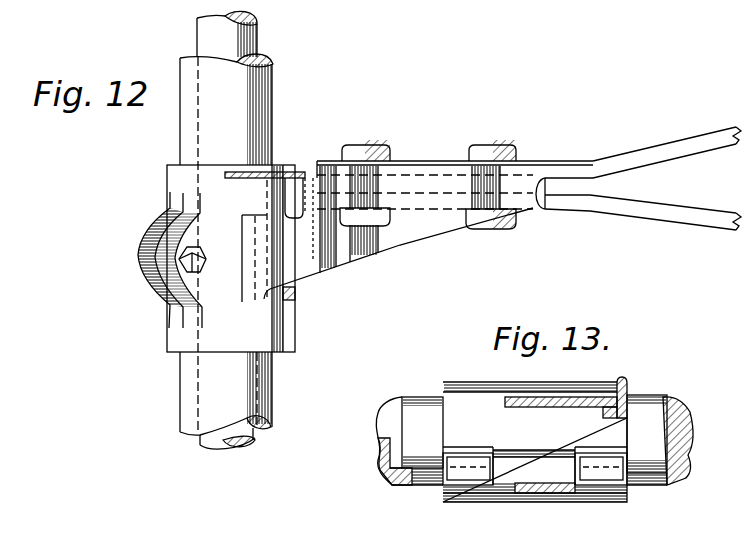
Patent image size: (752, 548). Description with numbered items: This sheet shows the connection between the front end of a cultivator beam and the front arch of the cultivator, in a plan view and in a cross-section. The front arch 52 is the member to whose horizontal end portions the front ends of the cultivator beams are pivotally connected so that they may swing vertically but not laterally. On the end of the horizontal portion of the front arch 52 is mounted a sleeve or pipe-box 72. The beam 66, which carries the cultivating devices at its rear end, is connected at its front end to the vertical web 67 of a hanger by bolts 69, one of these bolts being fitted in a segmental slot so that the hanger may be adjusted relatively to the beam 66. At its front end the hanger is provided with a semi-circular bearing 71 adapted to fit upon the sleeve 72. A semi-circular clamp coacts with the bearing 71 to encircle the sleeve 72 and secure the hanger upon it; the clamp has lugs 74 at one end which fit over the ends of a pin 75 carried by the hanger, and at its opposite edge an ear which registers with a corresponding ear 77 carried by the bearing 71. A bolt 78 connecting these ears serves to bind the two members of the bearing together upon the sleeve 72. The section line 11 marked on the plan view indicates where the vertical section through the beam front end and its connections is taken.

In FIG. 12, the section line 11 is at (146, 301).
In FIG. 12, the front arch 52 is at (209, 40).
In FIG. 13, the front arch 52 is at (377, 479).
In FIG. 12, the beam 66 is at (618, 161).
In FIG. 13, the vertical web 67 is at (606, 416).
In FIG. 12, the bolts 69 is at (372, 144).
In FIG. 12, the semi-circular bearing 71 is at (196, 338).
In FIG. 12, the sleeve or pipe-box 72 is at (190, 108).
In FIG. 13, the sleeve or pipe-box 72 is at (437, 485).
In FIG. 13, the lugs 74 is at (464, 471).
In FIG. 13, the pin 75 is at (469, 490).
In FIG. 12, the ear 77 is at (160, 255).
In FIG. 12, the bolt 78 is at (199, 261).